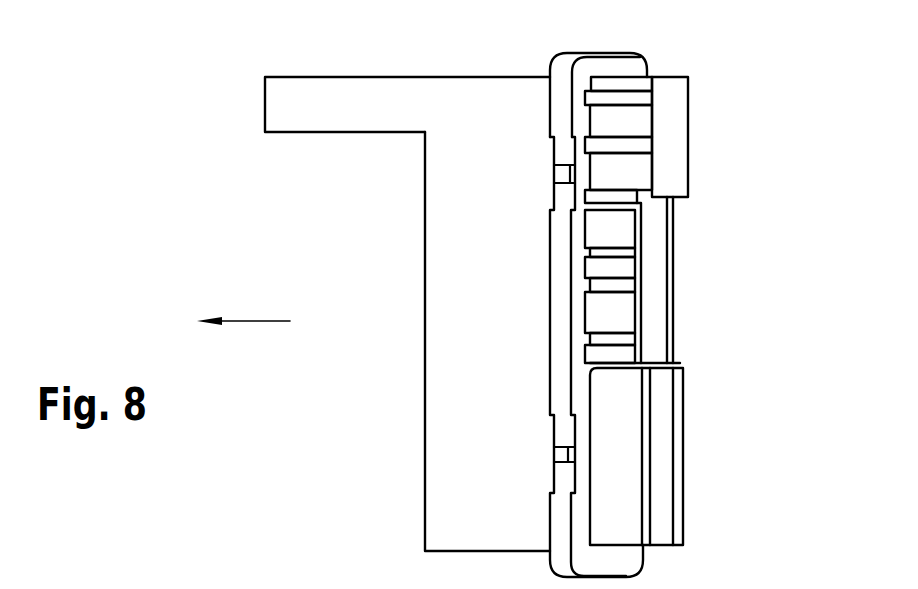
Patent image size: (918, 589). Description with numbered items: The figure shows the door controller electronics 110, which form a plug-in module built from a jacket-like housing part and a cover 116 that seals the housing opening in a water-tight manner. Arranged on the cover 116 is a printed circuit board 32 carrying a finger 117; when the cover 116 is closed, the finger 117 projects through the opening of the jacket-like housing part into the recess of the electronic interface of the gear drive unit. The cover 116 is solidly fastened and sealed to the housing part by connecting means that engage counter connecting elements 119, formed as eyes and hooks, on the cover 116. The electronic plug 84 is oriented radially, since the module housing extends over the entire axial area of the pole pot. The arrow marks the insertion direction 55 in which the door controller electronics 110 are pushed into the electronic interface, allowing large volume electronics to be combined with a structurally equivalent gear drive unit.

The door controller electronics 110 is at (232, 230).
The finger 117 is at (338, 103).
The printed circuit board 32 is at (465, 295).
The counter connecting elements 119 is at (565, 173).
The electronic plug 84 is at (618, 267).
The cover 116 is at (582, 395).
The insertion direction 55 is at (252, 322).